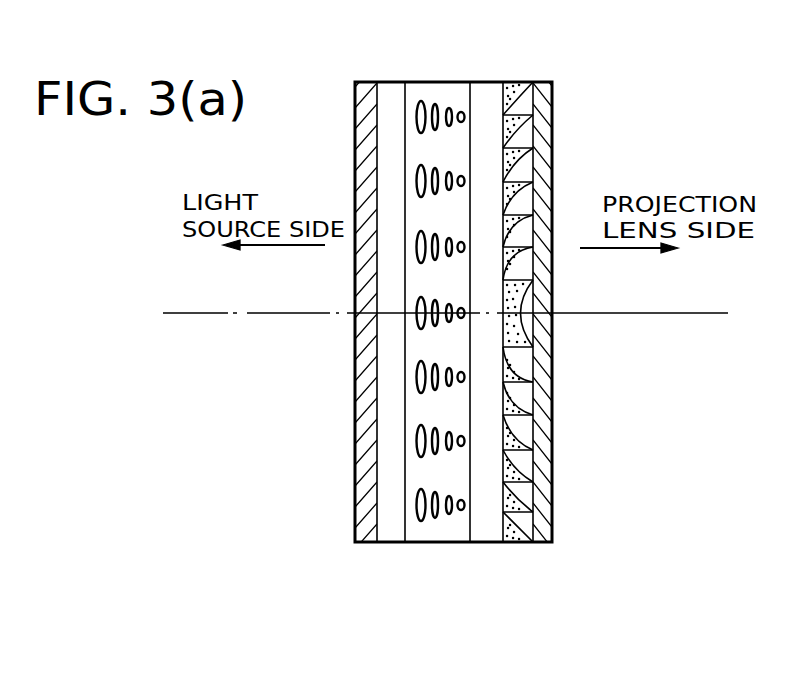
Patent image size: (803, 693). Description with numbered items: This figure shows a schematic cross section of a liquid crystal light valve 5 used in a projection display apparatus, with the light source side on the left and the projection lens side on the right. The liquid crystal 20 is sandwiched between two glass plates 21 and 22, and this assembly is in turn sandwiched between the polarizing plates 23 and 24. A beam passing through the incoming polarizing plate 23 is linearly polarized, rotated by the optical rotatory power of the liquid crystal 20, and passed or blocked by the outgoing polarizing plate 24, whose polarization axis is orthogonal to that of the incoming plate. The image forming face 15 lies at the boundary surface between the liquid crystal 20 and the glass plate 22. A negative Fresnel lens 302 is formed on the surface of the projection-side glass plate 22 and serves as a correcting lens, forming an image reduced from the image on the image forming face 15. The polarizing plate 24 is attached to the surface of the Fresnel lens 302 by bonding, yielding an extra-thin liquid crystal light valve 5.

The liquid crystal light valve 5 is at (465, 337).
The image forming face 15 is at (470, 82).
The liquid crystal 20 is at (437, 508).
The glass plate 21 is at (392, 82).
The glass plate 22 is at (490, 82).
The polarizing plate 23 is at (362, 82).
The polarizing plate 24 is at (549, 83).
The Fresnel lens 302 is at (515, 82).